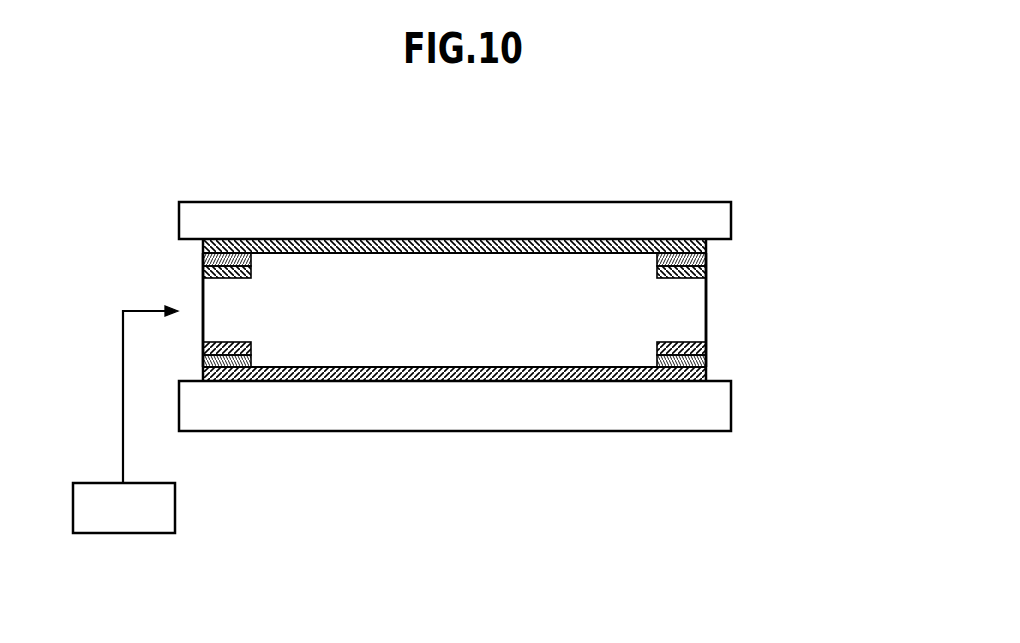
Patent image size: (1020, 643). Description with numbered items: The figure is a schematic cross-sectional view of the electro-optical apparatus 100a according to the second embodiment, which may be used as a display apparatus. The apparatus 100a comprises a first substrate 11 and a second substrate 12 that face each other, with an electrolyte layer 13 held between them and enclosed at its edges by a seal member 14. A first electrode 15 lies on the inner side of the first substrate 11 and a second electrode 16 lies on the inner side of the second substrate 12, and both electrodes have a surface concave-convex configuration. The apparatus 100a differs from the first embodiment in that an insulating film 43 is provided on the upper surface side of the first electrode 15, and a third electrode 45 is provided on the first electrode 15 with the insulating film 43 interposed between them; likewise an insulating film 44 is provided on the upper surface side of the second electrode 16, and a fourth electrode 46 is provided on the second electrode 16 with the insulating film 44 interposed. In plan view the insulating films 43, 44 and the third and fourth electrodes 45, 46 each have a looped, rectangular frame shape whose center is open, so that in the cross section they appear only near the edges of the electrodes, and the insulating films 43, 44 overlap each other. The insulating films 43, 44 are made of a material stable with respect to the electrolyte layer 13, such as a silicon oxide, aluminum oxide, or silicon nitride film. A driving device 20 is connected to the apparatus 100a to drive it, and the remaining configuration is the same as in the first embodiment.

The first substrate 11 is at (733, 222).
The second substrate 12 is at (733, 412).
The electrolyte layer 13 is at (672, 321).
The seal member 14 is at (718, 292).
The first electrode 15 is at (456, 250).
The second electrode 16 is at (448, 382).
The insulating film 43 is at (704, 250).
The insulating film 44 is at (683, 382).
The third electrode 45 is at (657, 263).
The fourth electrode 46 is at (636, 382).
The driving device 20 is at (165, 483).
The electro-optical apparatus 100a is at (488, 566).